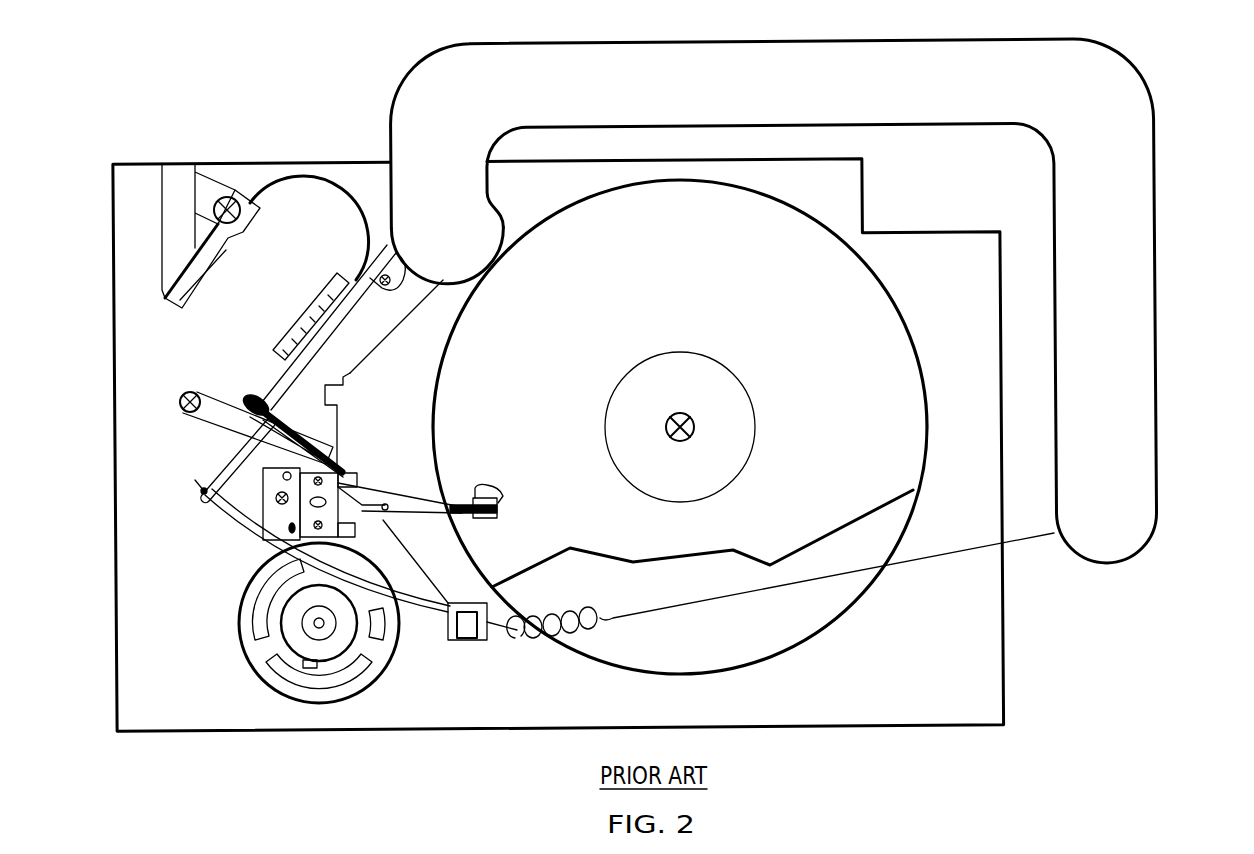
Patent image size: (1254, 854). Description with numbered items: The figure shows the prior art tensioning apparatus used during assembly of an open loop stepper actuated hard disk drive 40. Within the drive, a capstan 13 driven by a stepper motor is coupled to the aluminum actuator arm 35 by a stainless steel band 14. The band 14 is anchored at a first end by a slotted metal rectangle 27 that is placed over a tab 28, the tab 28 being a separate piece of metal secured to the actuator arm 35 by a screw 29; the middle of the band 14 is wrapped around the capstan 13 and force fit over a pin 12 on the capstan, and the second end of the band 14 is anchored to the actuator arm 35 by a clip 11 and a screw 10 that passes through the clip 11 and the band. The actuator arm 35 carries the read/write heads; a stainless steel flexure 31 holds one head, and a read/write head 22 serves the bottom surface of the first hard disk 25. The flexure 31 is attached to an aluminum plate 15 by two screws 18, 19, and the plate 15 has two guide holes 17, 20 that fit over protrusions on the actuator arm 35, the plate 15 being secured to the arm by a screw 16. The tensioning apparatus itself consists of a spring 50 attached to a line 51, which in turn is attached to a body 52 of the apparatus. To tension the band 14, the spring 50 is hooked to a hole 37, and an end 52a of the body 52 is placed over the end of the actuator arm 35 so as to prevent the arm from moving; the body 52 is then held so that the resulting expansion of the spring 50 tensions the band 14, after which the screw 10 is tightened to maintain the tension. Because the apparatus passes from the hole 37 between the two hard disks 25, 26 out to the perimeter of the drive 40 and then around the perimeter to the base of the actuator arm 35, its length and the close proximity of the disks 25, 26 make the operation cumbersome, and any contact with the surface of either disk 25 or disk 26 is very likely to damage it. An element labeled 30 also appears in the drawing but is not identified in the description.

The screw 10 is at (463, 641).
The clip 11 is at (457, 603).
The pin 12 is at (303, 665).
The capstan 13 is at (295, 613).
The band 14 is at (278, 638).
The aluminum plate 15 is at (268, 510).
The screw 16 is at (278, 497).
The guide hole 17 is at (285, 530).
The screw 18 is at (320, 532).
The screw 19 is at (340, 475).
The guide hole 20 is at (263, 467).
The read/write head 22 is at (488, 520).
The hard disk 25 is at (910, 383).
The hard disk 26 is at (790, 637).
The metal rectangle 27 is at (207, 500).
The tab 28 is at (200, 493).
The screw 29 is at (233, 428).
The arm 30 is at (193, 413).
The flexure 31 is at (397, 492).
The actuator arm 35 is at (368, 347).
The hole 37 is at (508, 635).
The hard disk drive 40 is at (1043, 674).
The spring 50 is at (527, 640).
The line 51 is at (922, 558).
The body 52 is at (1143, 282).
The end of body 52a is at (473, 249).